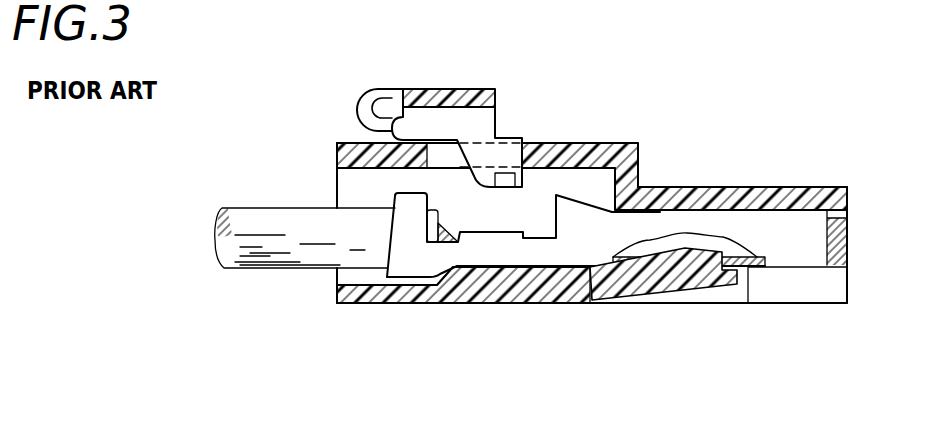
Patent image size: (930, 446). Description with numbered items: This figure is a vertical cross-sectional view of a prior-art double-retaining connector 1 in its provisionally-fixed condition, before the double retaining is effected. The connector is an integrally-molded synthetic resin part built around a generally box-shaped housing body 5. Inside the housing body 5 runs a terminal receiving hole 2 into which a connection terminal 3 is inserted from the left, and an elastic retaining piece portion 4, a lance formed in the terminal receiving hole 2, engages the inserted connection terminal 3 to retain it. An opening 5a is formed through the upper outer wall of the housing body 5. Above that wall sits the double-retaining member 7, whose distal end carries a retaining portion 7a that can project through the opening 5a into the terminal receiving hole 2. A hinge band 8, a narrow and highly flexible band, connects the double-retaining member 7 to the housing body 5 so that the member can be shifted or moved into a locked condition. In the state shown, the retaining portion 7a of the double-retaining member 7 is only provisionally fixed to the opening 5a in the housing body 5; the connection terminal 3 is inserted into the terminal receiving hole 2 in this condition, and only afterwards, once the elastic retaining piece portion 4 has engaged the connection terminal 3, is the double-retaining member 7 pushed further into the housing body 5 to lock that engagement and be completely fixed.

The double-retaining connector 1 is at (628, 123).
The terminal receiving hole 2 is at (827, 243).
The connection terminal 3 is at (682, 225).
The elastic retaining piece portion 4 is at (700, 252).
The housing body 5 is at (812, 187).
The opening 5a is at (440, 172).
The double-retaining member 7 is at (443, 88).
The retaining portion 7a is at (503, 157).
The hinge band 8 is at (355, 105).